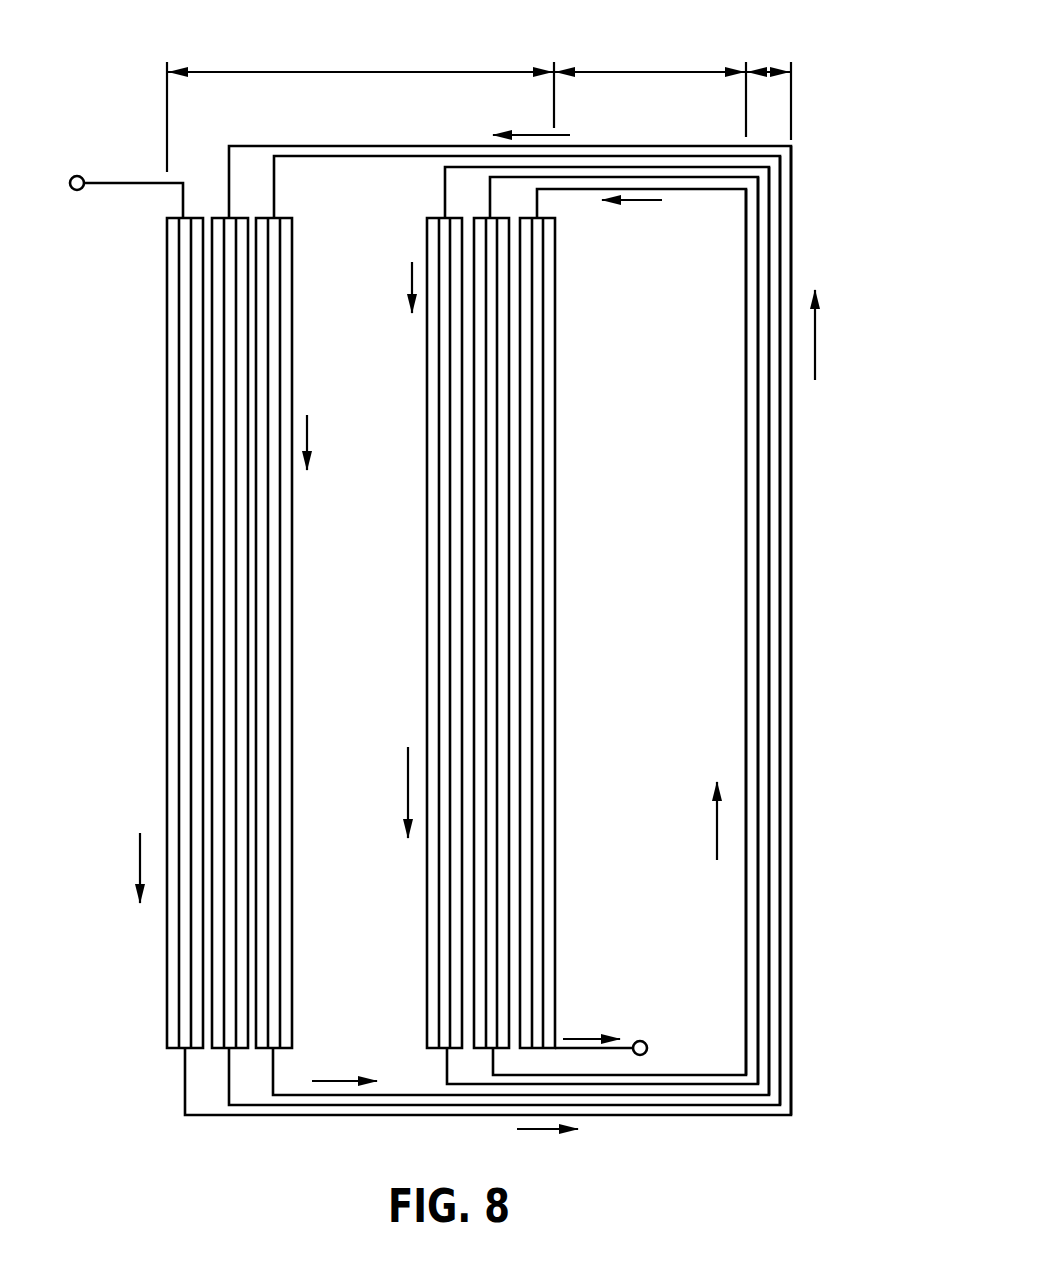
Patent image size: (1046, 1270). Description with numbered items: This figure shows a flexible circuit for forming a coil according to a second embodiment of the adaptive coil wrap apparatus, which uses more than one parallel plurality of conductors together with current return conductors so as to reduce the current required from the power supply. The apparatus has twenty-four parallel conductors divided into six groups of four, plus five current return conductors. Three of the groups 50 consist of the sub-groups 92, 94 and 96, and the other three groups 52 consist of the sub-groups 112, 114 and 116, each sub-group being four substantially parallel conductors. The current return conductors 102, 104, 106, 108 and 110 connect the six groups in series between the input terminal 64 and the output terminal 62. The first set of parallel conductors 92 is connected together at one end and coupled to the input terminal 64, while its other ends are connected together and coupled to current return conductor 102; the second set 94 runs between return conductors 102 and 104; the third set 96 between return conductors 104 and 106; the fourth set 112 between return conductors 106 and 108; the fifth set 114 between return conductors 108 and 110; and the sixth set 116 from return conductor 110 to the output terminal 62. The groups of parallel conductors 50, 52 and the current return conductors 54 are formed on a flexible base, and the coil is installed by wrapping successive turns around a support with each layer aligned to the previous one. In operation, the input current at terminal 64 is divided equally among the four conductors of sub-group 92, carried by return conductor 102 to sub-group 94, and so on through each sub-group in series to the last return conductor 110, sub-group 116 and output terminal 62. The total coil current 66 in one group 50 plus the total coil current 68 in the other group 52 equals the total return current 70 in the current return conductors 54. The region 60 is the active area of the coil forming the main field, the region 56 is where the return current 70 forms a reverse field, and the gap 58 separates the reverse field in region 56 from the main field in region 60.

The groups of parallel conductors 50 is at (414, 607).
The groups of parallel conductors 52 is at (521, 595).
The current return conductors 54 is at (761, 630).
The region 56 is at (770, 72).
The gap 58 is at (682, 12).
The region 60 is at (347, 72).
The output terminal 62 is at (636, 1040).
The input terminal 64 is at (73, 191).
The total coil current 66 is at (138, 848).
The total coil current 68 is at (406, 785).
The total return current 70 is at (715, 830).
The first set of parallel conductors 92 is at (190, 217).
The second set of parallel conductors 94 is at (235, 217).
The third set of parallel conductors 96 is at (278, 217).
The current return conductor 102 is at (791, 457).
The current return conductor 104 is at (780, 507).
The current return conductor 106 is at (769, 560).
The current return conductor 108 is at (758, 608).
The current return conductor 110 is at (746, 647).
The fourth set of parallel conductors 112 is at (431, 218).
The fifth set of parallel conductors 114 is at (480, 217).
The sixth set of parallel conductors 116 is at (537, 218).